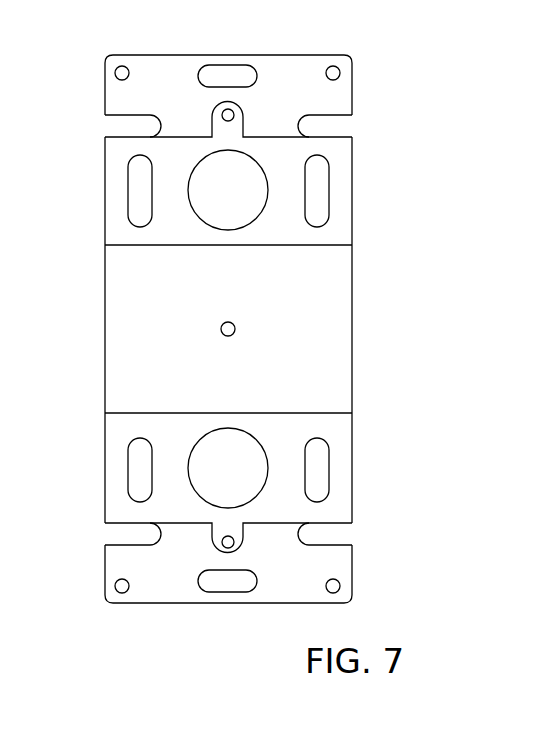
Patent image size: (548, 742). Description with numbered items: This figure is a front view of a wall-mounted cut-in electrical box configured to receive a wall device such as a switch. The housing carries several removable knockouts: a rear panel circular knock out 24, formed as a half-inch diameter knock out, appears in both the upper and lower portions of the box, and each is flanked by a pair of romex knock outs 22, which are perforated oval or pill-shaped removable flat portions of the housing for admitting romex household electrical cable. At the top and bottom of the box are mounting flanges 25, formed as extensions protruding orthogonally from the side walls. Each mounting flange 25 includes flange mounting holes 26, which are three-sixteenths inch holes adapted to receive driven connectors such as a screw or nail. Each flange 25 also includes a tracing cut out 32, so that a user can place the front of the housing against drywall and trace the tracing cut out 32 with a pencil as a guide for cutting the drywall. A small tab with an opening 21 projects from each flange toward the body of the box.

The tab aperture 21 is at (228, 108).
The romex knock out 22 is at (140, 183).
The rear panel circular knock out 24 is at (247, 182).
The mounting flange 25 is at (335, 88).
The flange mounting hole 26 is at (116, 70).
The tracing cut out 32 is at (132, 123).